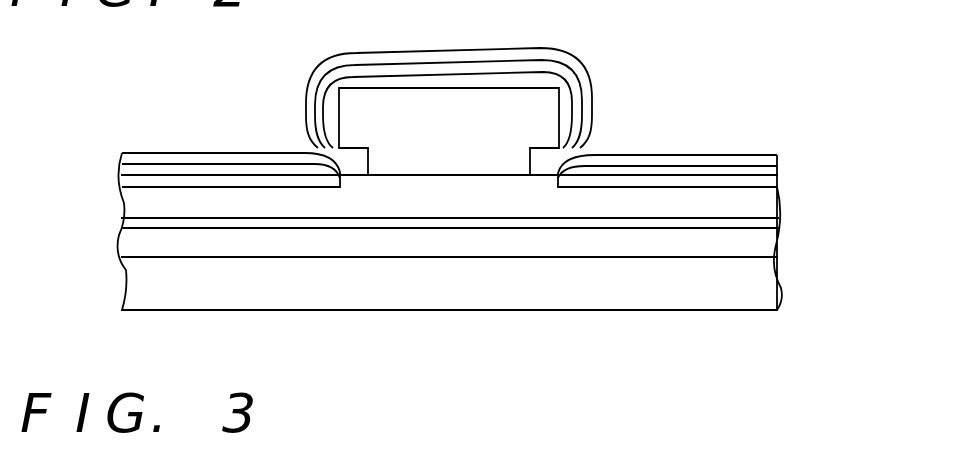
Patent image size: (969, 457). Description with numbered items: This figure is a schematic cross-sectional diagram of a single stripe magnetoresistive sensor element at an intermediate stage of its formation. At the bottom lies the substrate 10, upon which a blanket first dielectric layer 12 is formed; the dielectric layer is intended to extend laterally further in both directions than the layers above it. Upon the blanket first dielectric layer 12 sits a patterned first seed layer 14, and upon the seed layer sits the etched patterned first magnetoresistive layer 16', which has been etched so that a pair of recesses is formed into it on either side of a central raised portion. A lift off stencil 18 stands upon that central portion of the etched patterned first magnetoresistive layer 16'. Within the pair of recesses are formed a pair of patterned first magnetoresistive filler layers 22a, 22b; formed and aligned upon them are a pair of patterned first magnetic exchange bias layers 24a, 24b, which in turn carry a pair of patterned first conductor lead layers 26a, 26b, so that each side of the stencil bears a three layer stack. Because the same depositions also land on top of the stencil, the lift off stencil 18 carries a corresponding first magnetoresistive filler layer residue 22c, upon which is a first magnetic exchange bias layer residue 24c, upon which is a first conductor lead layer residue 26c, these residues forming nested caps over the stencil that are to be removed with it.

The substrate 10 is at (142, 282).
The blanket first dielectric layer 12 is at (142, 243).
The patterned first seed layer 14 is at (142, 223).
The etched patterned first magnetoresistive (MR) layer 16' is at (415, 183).
The lift off stencil 18 is at (377, 110).
The patterned first magnetoresistive (MR) filler layer 22a is at (148, 180).
The patterned first magnetic exchange bias layer 24a is at (153, 170).
The patterned first conductor lead layer 26a is at (157, 158).
The patterned first magnetoresistive (MR) filler layer 22b is at (752, 182).
The patterned first magnetic exchange bias layer 24b is at (747, 172).
The patterned first conductor lead layer 26b is at (740, 160).
The first magnetoresistive (MR) filler layer residue 22c is at (435, 78).
The first magnetic exchange bias layer residue 24c is at (507, 65).
The first conductor lead layer residue 26c is at (550, 62).